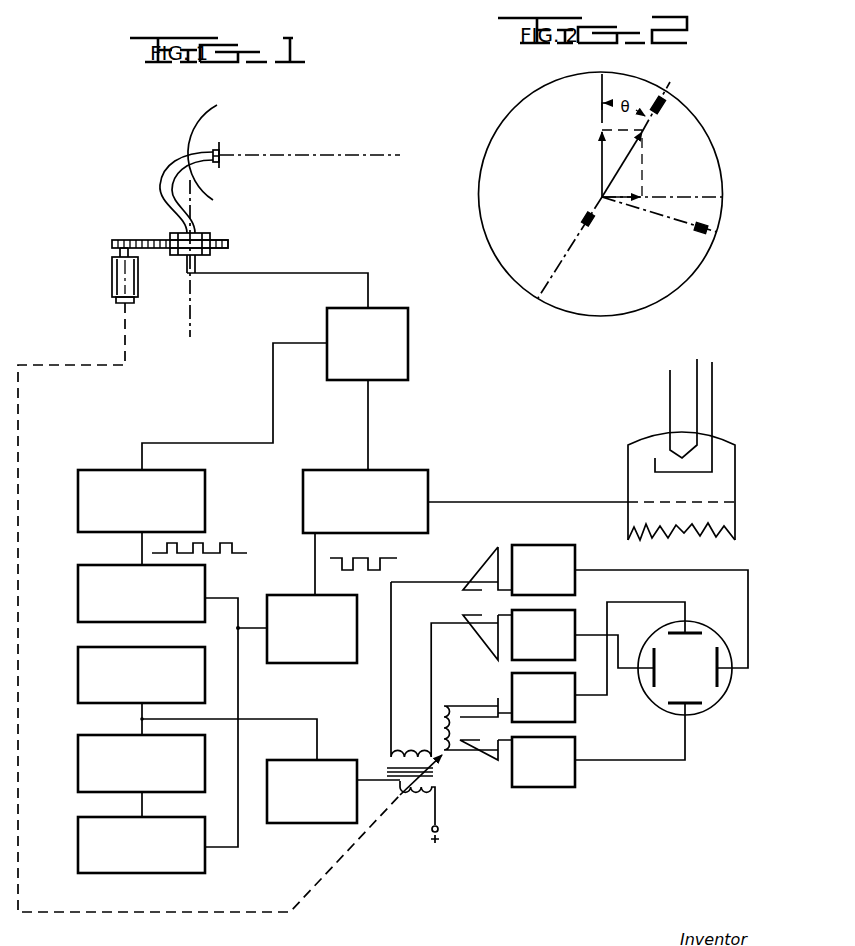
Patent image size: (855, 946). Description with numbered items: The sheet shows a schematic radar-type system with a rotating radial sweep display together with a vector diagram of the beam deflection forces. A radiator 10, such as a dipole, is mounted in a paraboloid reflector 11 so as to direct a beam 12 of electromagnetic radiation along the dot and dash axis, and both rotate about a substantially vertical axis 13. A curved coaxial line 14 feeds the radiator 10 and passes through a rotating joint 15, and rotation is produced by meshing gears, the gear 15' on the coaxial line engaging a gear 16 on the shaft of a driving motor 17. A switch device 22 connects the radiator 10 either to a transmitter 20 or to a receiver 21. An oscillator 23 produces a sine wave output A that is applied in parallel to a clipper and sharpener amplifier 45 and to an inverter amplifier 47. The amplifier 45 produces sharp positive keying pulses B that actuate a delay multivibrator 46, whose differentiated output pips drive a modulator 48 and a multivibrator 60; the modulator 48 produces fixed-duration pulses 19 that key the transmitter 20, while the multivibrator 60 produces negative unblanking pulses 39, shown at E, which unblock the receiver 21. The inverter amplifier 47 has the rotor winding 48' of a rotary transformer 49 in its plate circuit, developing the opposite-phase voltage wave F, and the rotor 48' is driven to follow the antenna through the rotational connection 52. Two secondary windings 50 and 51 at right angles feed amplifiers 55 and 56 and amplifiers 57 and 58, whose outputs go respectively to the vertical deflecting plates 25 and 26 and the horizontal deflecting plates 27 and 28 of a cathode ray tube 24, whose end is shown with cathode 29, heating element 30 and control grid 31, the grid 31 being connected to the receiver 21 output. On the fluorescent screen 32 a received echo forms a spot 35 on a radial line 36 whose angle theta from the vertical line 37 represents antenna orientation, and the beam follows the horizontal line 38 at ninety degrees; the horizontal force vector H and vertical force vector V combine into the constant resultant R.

In FIG. 1, the radiator 10 is at (219, 147).
In FIG. 1, the reflector 11 is at (195, 132).
In FIG. 1, the beam 12 is at (310, 155).
In FIG. 1, the axis 13 is at (190, 310).
In FIG. 1, the coaxial line 14 is at (158, 183).
In FIG. 1, the rotating joint 15 is at (197, 240).
In FIG. 1, the gear teeth 15' is at (238, 238).
In FIG. 1, the gear 16 is at (122, 238).
In FIG. 1, the driving motor 17 is at (115, 278).
In FIG. 1, the pulses 19 is at (227, 543).
In FIG. 1, the transmitter 20 is at (107, 470).
In FIG. 1, the receiver 21 is at (397, 470).
In FIG. 1, the switch device 22 is at (377, 308).
In FIG. 1, the oscillator 23 is at (78, 685).
In FIG. 1, the cathode ray tube 24 is at (737, 522).
In FIG. 1, the vertical deflecting plate 25 is at (697, 634).
In FIG. 1, the vertical deflecting plate 26 is at (680, 707).
In FIG. 1, the horizontal deflecting plate 27 is at (730, 682).
In FIG. 1, the horizontal deflecting plate 28 is at (643, 676).
In FIG. 1, the cathode 29 is at (698, 467).
In FIG. 1, the heating element 30 is at (677, 455).
In FIG. 1, the control grid 31 is at (643, 503).
In FIG. 2, the fluorescent screen 32 is at (678, 275).
In FIG. 2, the spot 35 is at (668, 100).
In FIG. 2, the radial line 36 is at (645, 130).
In FIG. 2, the vertical line 37 is at (601, 90).
In FIG. 2, the horizontal line 38 is at (698, 194).
In FIG. 1, the unblanking pulses 39 is at (397, 557).
In FIG. 1, the clipper and sharpener amplifier 45 is at (78, 773).
In FIG. 1, the delay multivibrator 46 is at (78, 837).
In FIG. 1, the inverter amplifier 47 is at (330, 760).
In FIG. 1, the modulator 48 is at (128, 593).
In FIG. 1, the rotor winding 48' is at (415, 814).
In FIG. 1, the rotary transformer 49 is at (438, 770).
In FIG. 1, the secondary winding 50 is at (443, 707).
In FIG. 1, the secondary winding 51 is at (415, 750).
In FIG. 1, the rotational connection 52 is at (18, 510).
In FIG. 1, the amplifier 55 is at (575, 677).
In FIG. 1, the amplifier 56 is at (577, 748).
In FIG. 1, the amplifier 57 is at (577, 566).
In FIG. 1, the amplifier 58 is at (575, 614).
In FIG. 1, the multivibrator 60 is at (267, 607).
In FIG. 1, the sine wave voltage output A is at (140, 719).
In FIG. 1, the positive keying pulses B is at (143, 808).
In FIG. 1, the negative unblanking pulses E is at (315, 558).
In FIG. 1, the voltage wave F is at (386, 778).
In FIG. 2, the resultant vector R is at (617, 165).
In FIG. 2, the vertical force vector V is at (601, 183).
In FIG. 2, the horizontal force vector H is at (618, 200).